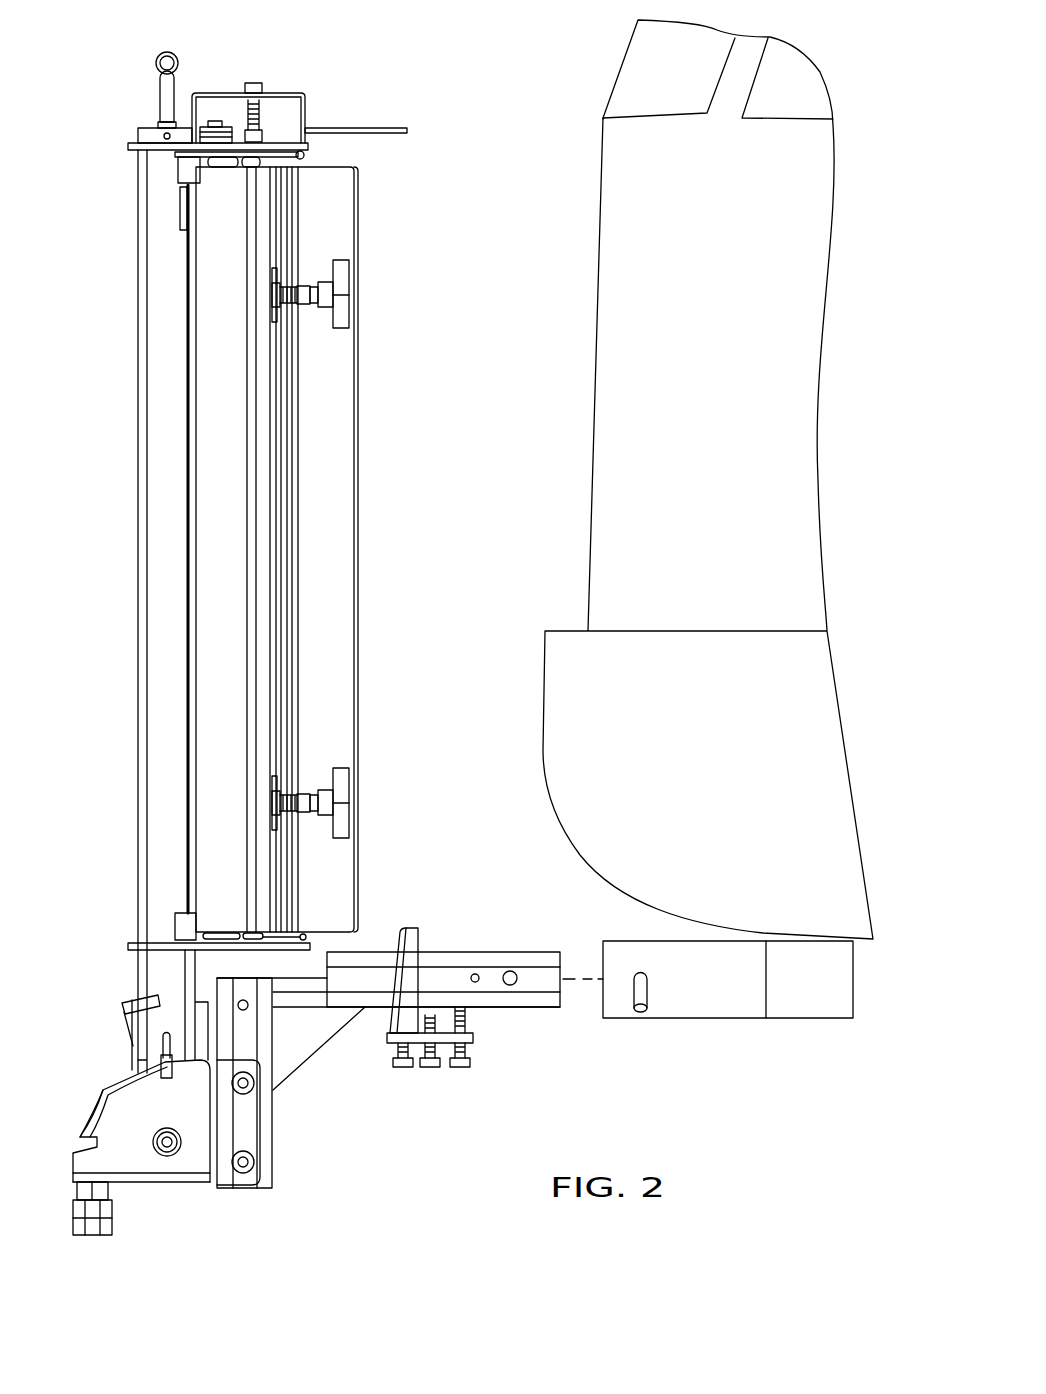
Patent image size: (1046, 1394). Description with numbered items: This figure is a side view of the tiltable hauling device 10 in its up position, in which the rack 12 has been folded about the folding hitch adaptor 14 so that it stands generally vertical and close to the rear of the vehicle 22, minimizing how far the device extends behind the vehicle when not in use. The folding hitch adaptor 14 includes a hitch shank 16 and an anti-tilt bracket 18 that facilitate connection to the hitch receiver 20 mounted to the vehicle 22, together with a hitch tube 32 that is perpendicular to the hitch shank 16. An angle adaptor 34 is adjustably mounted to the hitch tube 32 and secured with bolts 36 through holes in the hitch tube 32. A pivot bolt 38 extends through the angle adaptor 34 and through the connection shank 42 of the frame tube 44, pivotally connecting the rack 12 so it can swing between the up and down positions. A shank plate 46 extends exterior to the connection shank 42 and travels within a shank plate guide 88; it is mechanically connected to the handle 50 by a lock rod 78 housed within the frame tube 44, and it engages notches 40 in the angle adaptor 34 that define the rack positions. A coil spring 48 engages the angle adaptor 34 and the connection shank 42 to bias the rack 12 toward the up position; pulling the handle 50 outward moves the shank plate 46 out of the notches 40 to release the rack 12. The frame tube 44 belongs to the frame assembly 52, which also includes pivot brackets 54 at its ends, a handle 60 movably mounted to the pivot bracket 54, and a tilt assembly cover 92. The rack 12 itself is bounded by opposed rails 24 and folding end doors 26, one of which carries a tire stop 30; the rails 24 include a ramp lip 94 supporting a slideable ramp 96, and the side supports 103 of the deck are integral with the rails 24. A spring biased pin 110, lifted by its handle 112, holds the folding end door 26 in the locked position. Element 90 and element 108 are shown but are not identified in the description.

The tiltable hauling device 10 is at (512, 140).
The rack 12 is at (368, 240).
The folding hitch adaptor 14 is at (364, 1102).
The hitch shank 16 is at (485, 958).
The anti-tilt bracket 18 is at (415, 940).
The hitch receiver 20 is at (688, 992).
The vehicle 22 is at (656, 382).
The rails 24 is at (305, 156).
The folding end doors 26 is at (318, 594).
The tire stop 30 is at (335, 482).
The hitch tube 32 is at (247, 1032).
The angle adaptor 34 is at (197, 1160).
The bolts 36 is at (258, 1165).
The pivot bolt 38 is at (160, 1150).
The notches 40 is at (104, 1120).
The connection shank 42 is at (160, 980).
The frame tube 44 is at (168, 588).
The shank plate 46 is at (165, 1060).
The spring 48 is at (124, 1006).
The handle 50 is at (166, 52).
The frame assembly 52 is at (116, 384).
The pivot brackets 54 is at (136, 146).
The handle 60 is at (407, 130).
The lock rod 78 is at (168, 90).
The shank plate guide 88 is at (165, 1034).
The housing cover 90 is at (286, 110).
The tilt assembly cover 92 is at (266, 92).
The ramp lip 94 is at (196, 160).
The ramp 96 is at (219, 165).
The side supports 103 is at (252, 165).
The slide bar 108 is at (176, 206).
The pin 110 is at (290, 302).
The handle 112 is at (341, 283).